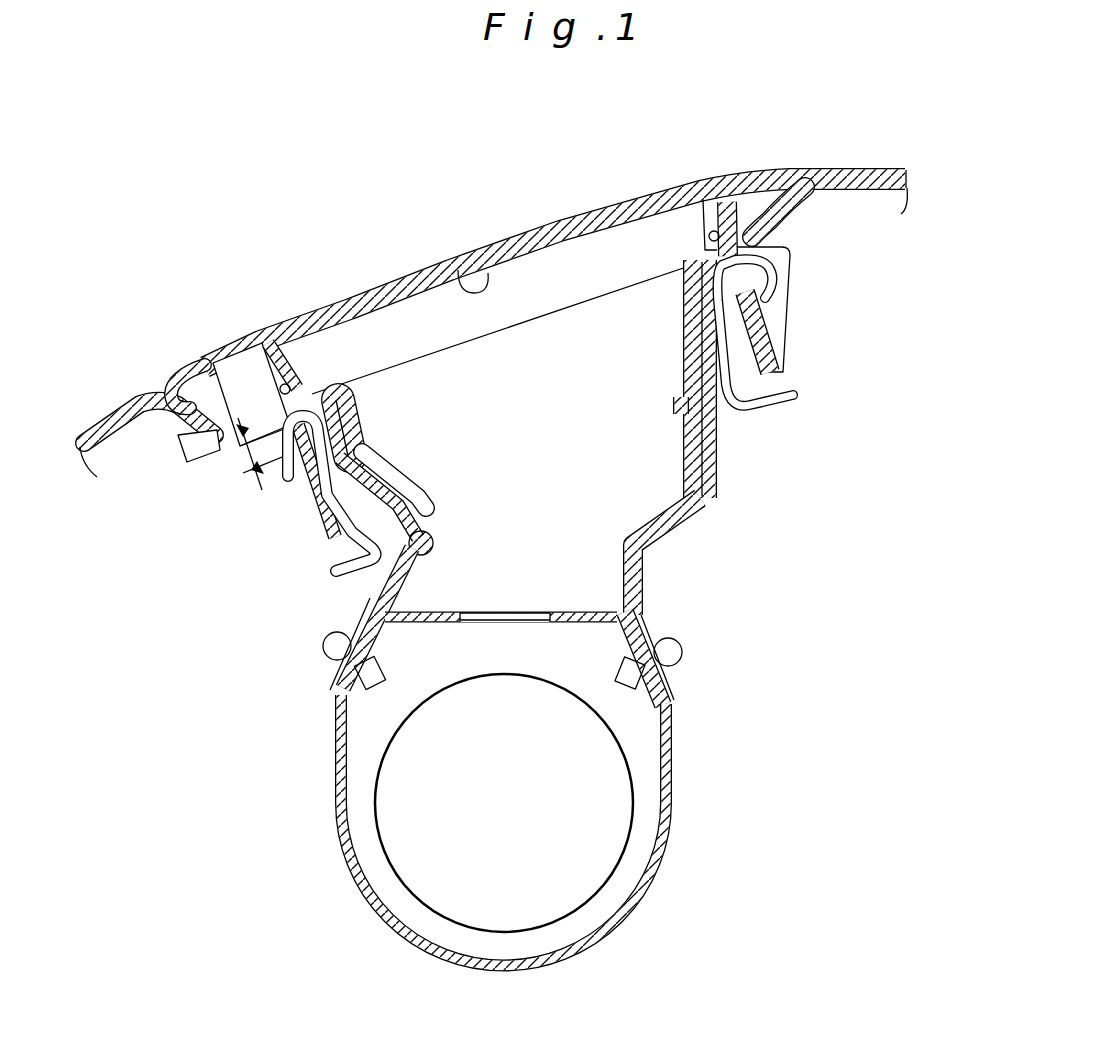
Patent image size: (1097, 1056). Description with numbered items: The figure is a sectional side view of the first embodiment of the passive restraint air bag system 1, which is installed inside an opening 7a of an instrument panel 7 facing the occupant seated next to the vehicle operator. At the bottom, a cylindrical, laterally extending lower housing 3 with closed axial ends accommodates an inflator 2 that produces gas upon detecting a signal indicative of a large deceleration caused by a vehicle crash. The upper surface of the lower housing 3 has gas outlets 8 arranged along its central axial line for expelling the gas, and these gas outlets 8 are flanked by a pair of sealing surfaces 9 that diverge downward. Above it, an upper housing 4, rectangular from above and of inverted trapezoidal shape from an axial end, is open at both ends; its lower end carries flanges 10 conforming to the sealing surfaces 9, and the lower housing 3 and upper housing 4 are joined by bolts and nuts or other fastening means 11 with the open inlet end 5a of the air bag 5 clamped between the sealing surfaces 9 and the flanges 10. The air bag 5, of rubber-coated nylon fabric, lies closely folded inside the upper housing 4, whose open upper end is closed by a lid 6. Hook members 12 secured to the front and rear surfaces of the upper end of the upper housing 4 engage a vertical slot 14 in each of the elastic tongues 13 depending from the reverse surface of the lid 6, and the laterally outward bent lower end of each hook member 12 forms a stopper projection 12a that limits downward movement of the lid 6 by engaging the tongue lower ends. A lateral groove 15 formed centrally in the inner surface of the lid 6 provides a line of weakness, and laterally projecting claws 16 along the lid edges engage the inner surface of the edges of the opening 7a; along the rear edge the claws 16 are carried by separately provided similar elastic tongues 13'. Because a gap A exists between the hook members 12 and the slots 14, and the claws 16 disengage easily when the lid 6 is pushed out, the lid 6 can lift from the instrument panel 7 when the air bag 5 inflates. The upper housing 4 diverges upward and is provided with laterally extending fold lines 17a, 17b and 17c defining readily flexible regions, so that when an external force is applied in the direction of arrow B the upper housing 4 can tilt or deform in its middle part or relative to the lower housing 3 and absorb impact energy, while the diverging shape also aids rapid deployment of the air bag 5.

The air bag system 1 is at (540, 499).
The inflator 2 is at (515, 821).
The lower housing 3 is at (509, 782).
The upper housing 4 is at (712, 502).
The air bag 5 is at (432, 536).
The open inlet end 5a is at (668, 712).
The lid 6 is at (528, 218).
The instrument panel 7 is at (493, 304).
The opening 7a is at (190, 450).
The gas outlets 8 is at (487, 612).
The sealing surfaces 9 is at (670, 668).
The flanges 10 is at (668, 692).
The fastening means 11 is at (674, 646).
The hook members 12 is at (551, 439).
The stopper projection 12a is at (787, 402).
The elastic tongues 13 is at (554, 437).
The elastic tongues 13' is at (198, 529).
The vertical slot 14 is at (710, 235).
The lateral groove 15 is at (462, 274).
The claws 16 is at (790, 266).
The fold line 17a is at (684, 336).
The fold line 17b is at (660, 498).
The fold line 17c is at (650, 614).
The gap A is at (256, 462).
The arrow B is at (577, 167).